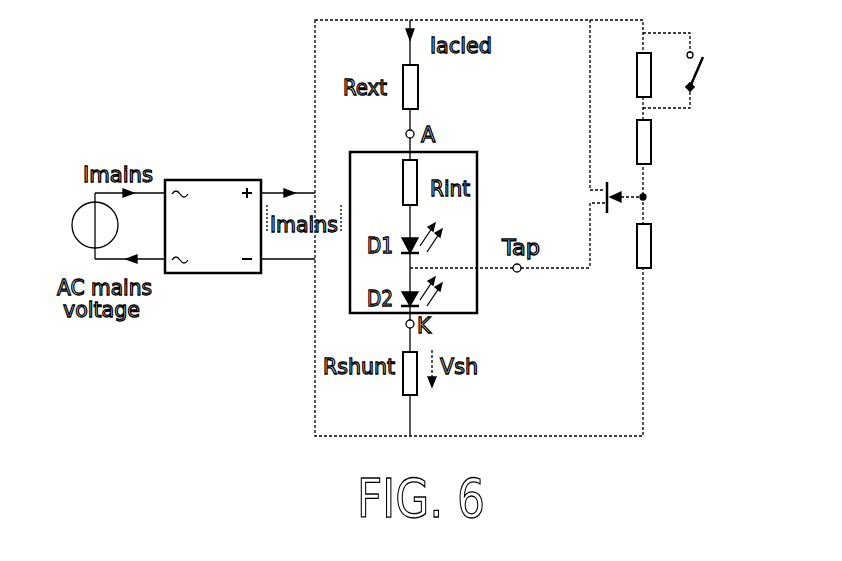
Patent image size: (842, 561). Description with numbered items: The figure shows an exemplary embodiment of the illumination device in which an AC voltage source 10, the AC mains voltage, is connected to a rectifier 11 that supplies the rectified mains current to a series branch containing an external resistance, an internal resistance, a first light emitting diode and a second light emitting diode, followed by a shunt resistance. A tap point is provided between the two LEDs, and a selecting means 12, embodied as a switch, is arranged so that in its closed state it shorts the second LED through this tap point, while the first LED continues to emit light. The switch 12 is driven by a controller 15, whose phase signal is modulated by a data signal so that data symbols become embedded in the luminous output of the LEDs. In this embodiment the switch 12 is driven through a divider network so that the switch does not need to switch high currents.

The AC voltage source 10 is at (72, 222).
The rectifier 11 is at (213, 274).
The selecting means 12 is at (578, 198).
The controller 15 is at (707, 87).